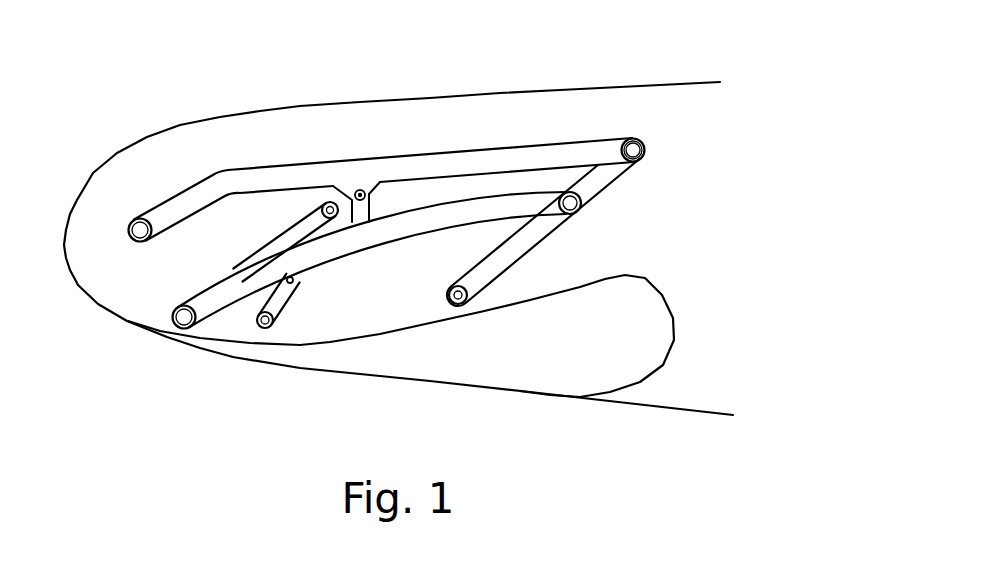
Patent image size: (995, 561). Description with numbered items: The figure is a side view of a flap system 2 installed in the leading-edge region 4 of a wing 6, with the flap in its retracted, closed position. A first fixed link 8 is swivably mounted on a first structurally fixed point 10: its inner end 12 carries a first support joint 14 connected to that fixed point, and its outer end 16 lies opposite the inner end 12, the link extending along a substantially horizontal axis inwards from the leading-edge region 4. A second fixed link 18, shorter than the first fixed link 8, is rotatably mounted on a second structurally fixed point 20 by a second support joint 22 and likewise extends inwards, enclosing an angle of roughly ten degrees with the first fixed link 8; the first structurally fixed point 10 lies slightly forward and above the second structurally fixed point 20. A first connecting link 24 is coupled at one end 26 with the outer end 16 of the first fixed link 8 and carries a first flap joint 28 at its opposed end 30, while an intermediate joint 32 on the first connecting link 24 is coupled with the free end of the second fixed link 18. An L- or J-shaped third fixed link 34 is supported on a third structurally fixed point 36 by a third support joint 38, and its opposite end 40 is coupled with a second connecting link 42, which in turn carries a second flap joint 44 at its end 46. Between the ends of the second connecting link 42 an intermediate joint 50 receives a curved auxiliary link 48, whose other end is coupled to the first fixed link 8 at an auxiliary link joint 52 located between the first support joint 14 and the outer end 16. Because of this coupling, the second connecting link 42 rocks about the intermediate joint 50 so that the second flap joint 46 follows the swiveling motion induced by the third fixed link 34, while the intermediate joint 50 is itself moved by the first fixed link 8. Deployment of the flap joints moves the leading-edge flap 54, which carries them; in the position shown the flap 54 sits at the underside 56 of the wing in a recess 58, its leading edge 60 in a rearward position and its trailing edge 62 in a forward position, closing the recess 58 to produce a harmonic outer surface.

The flap system 2 is at (380, 255).
The leading-edge region 4 is at (270, 80).
The wing 6 is at (590, 107).
The first fixed link 8 is at (433, 187).
The first structurally fixed point 10 is at (135, 199).
The inner end 12 is at (115, 244).
The first support joint 14 is at (143, 240).
The outer end 16 is at (652, 132).
The second fixed link 18 is at (395, 236).
The second structurally fixed point 20 is at (180, 282).
The second support joint 22 is at (185, 320).
The first connecting link 24 is at (515, 240).
The end 26 is at (583, 250).
The first flap joint 28 is at (457, 286).
The opposed end 30 is at (489, 314).
The intermediate joint 32 is at (587, 207).
The third fixed link 34 is at (290, 238).
The third structurally fixed point 36 is at (209, 276).
The third support joint 38 is at (360, 307).
The end 40 is at (334, 179).
The second connecting link 42 is at (292, 302).
The second flap joint 44 is at (273, 327).
The end 46 is at (311, 350).
The auxiliary link 48 is at (335, 264).
The intermediate joint 50 is at (314, 296).
The auxiliary link joint 52 is at (361, 189).
The leading-edge flap 54 is at (503, 362).
The underside 56 is at (673, 427).
The recess 58 is at (451, 352).
The leading edge 60 is at (655, 333).
The trailing edge 62 is at (112, 336).